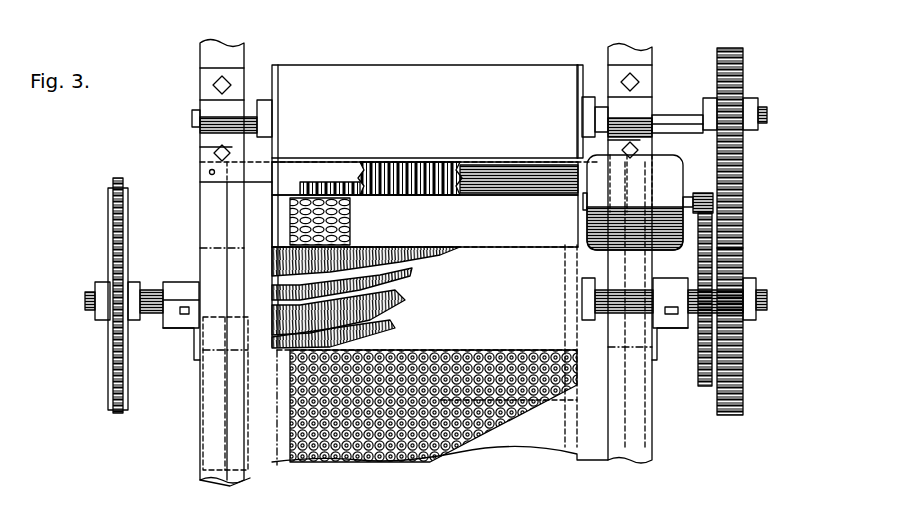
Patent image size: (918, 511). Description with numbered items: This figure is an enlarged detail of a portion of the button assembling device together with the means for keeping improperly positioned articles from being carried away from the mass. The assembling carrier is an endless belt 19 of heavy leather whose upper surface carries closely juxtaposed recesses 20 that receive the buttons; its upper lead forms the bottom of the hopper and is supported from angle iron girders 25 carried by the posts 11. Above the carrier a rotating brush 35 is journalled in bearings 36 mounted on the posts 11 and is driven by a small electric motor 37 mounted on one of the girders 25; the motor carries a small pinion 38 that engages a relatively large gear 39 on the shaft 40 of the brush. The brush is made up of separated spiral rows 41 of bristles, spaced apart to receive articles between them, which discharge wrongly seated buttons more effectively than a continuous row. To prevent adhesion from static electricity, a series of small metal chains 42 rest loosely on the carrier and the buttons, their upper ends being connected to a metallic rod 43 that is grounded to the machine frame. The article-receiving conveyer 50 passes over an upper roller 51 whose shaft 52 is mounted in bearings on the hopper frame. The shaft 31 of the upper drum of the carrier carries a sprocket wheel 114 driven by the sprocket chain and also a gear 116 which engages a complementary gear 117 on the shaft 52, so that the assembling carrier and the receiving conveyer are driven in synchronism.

The posts 11 is at (196, 345).
The endless belt 19 is at (470, 445).
The recesses 20 is at (405, 450).
The angle iron girders 25 is at (648, 52).
The shaft 31 is at (767, 297).
The rotating brush 35 is at (528, 330).
The bearings 36 is at (178, 305).
The electric motor 37 is at (666, 165).
The pinion 38 is at (703, 192).
The gear 39 is at (706, 386).
The shaft 40 is at (640, 295).
The spiral rows of bristles 41 is at (395, 277).
The metal chains 42 is at (406, 165).
The metallic rod 43 is at (455, 165).
The article-receiving conveyer 50 is at (470, 67).
The upper roller 51 is at (588, 70).
The shaft 52 is at (674, 110).
The sprocket wheel 114 is at (118, 412).
The gear 116 is at (745, 256).
The gear 117 is at (745, 67).